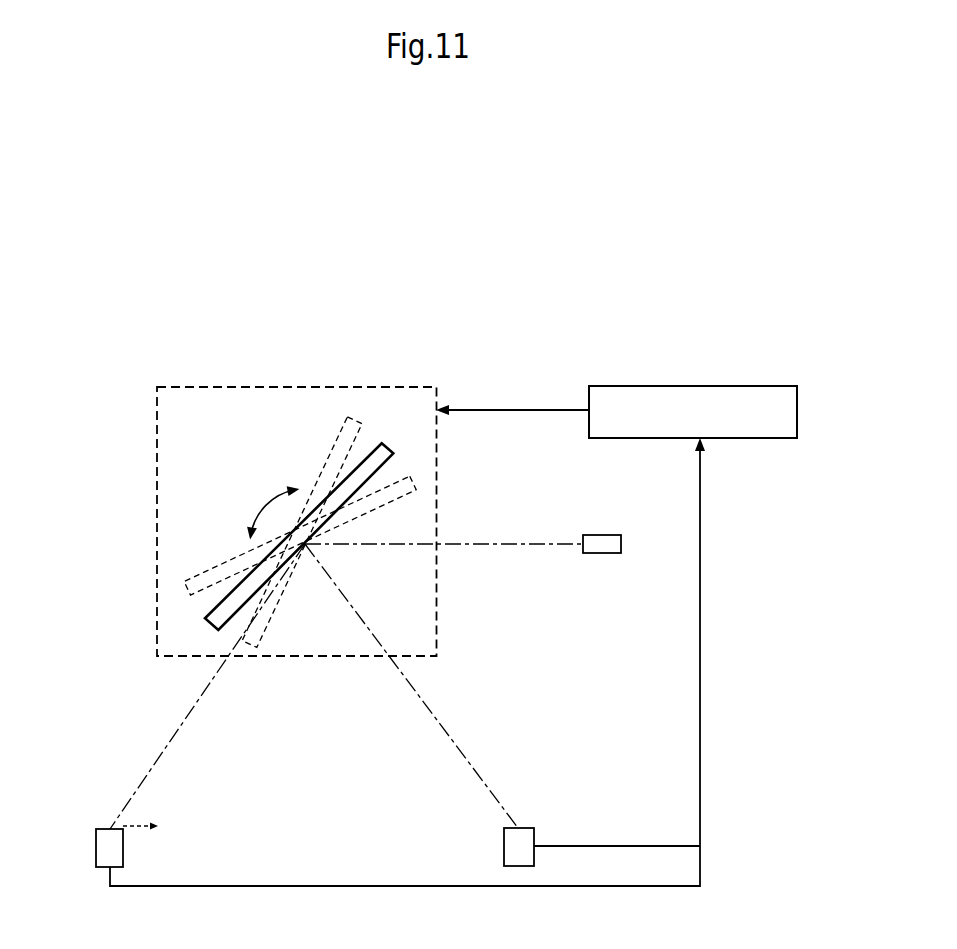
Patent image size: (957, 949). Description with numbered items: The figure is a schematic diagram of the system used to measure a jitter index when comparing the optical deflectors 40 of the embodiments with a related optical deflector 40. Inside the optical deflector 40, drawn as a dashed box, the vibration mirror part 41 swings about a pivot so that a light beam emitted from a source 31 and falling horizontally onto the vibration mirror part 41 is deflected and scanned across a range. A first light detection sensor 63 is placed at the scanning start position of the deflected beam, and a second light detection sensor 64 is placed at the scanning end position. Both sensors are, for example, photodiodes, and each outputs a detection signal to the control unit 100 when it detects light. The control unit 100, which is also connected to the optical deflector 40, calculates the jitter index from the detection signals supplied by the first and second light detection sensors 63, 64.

The optical deflector 40 is at (285, 386).
The vibration mirror part 41 is at (372, 447).
The control unit 100 is at (676, 386).
The light source 31 is at (602, 535).
The first light detection sensor 63 is at (123, 850).
The second light detection sensor 64 is at (504, 846).